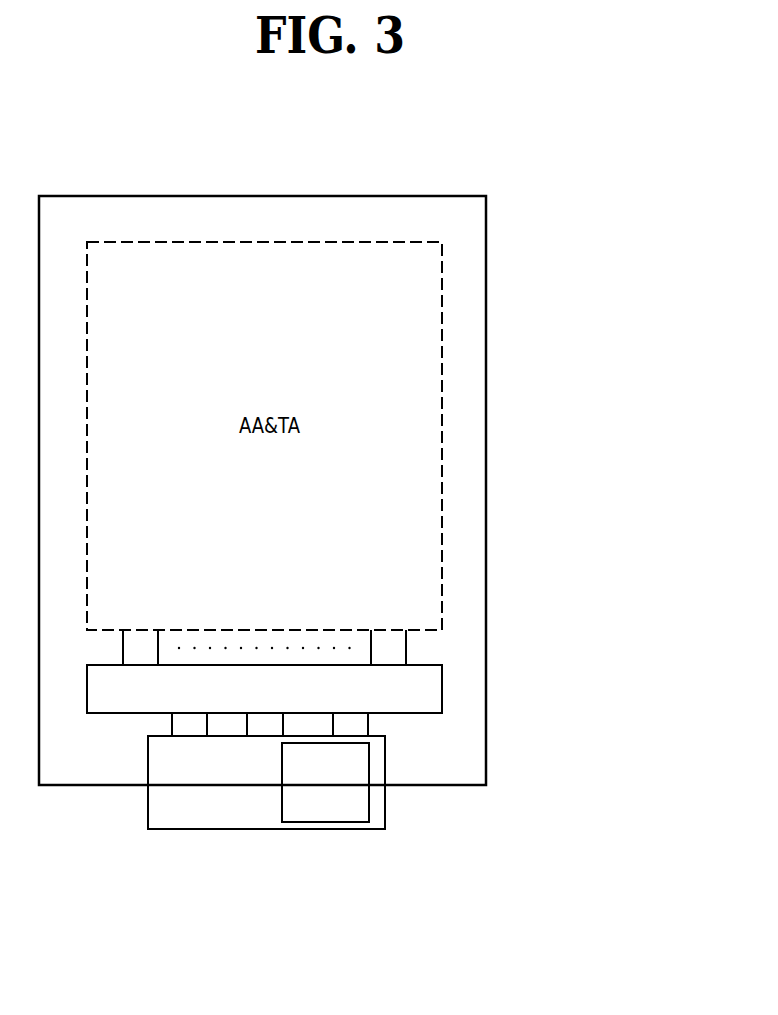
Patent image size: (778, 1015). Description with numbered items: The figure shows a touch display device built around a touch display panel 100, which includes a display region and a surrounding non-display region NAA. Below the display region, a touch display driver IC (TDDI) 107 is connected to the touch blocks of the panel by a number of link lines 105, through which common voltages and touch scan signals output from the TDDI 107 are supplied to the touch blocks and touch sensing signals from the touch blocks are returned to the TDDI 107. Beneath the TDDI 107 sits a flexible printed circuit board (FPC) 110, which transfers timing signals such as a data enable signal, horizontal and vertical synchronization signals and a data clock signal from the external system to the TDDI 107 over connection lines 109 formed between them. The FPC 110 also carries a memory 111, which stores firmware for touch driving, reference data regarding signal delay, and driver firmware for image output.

The panel 100 is at (389, 196).
The non-display region NAA is at (474, 442).
The link lines 105 is at (406, 640).
The touch display driver IC (TDDI) 107 is at (442, 668).
The connection lines 109 is at (368, 727).
The flexible printed circuit board (FPC) 110 is at (215, 830).
The memory 111 is at (347, 822).